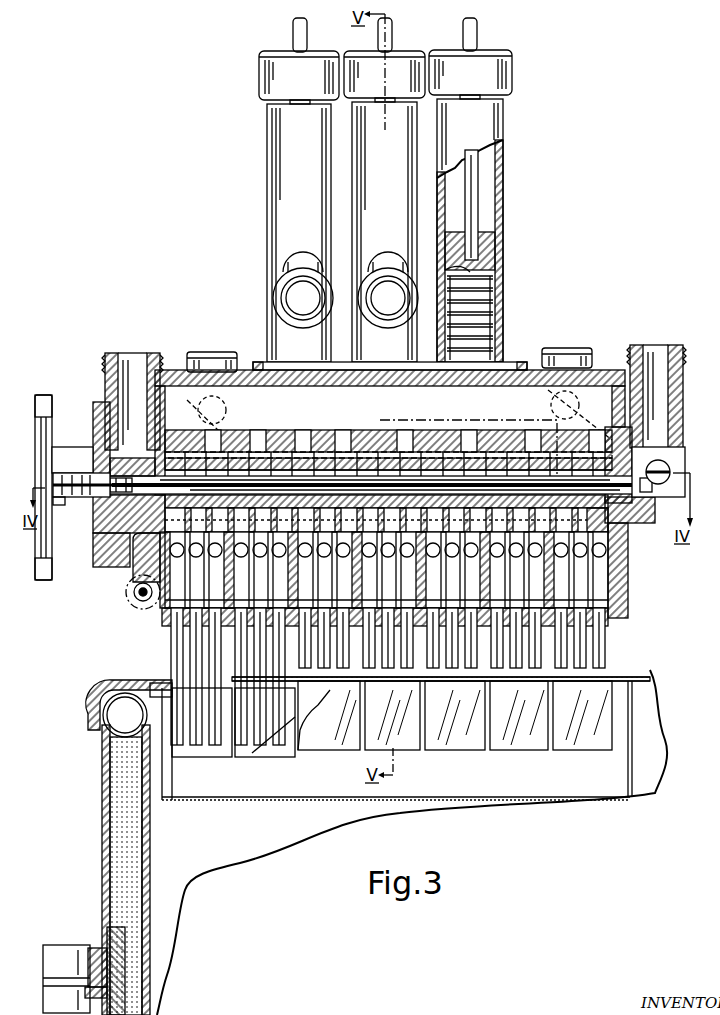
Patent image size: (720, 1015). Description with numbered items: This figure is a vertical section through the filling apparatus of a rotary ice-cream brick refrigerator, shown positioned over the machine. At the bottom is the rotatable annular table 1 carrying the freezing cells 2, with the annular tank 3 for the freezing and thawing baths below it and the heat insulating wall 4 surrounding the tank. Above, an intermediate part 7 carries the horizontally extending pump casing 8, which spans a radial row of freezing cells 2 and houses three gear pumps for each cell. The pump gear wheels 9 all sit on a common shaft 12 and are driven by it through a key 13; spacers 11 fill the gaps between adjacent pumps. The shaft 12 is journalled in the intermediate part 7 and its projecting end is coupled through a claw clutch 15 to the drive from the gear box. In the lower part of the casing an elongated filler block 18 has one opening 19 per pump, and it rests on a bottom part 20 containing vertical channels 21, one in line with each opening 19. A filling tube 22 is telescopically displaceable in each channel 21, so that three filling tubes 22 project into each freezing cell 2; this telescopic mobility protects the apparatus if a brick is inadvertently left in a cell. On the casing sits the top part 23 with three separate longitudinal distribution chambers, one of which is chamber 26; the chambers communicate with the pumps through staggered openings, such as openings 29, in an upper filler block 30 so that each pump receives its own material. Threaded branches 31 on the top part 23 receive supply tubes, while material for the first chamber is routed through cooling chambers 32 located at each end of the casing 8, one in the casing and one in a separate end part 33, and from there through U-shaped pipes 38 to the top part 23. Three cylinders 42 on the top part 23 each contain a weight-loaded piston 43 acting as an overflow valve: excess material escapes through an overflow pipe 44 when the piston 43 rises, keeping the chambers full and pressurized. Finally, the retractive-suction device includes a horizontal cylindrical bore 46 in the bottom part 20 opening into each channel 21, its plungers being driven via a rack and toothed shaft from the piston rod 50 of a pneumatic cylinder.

The annular table 1 is at (115, 678).
The freezing cells 2 is at (208, 750).
The annular tank 3 is at (246, 783).
The heat insulating wall 4 is at (123, 822).
The intermediate part 7 is at (78, 457).
The pump casing 8 is at (115, 551).
The pump gear wheels 9 is at (236, 455).
The spacers 11 is at (270, 457).
The shaft 12 is at (297, 474).
The key 13 is at (340, 480).
The claw clutch 15 is at (61, 503).
The filler block 18 is at (600, 520).
The openings 19 is at (596, 528).
The bottom part 20 is at (628, 578).
The vertical channels 21 is at (602, 586).
The filling tubes 22 is at (602, 636).
The top part 23 is at (595, 370).
The chamber 26 is at (358, 423).
The openings 29 is at (404, 433).
The filler block 30 is at (428, 432).
The threaded branches 31 is at (213, 352).
The cooling chambers 32 is at (665, 460).
The end part 33 is at (680, 428).
The U-shaped pipes 38 is at (389, 414).
The cylinders 42 is at (370, 122).
The weight-loaded piston 43 is at (497, 243).
The overflow pipe 44 is at (273, 298).
The cylindrical bore 46 is at (171, 552).
The piston rod 50 is at (133, 592).